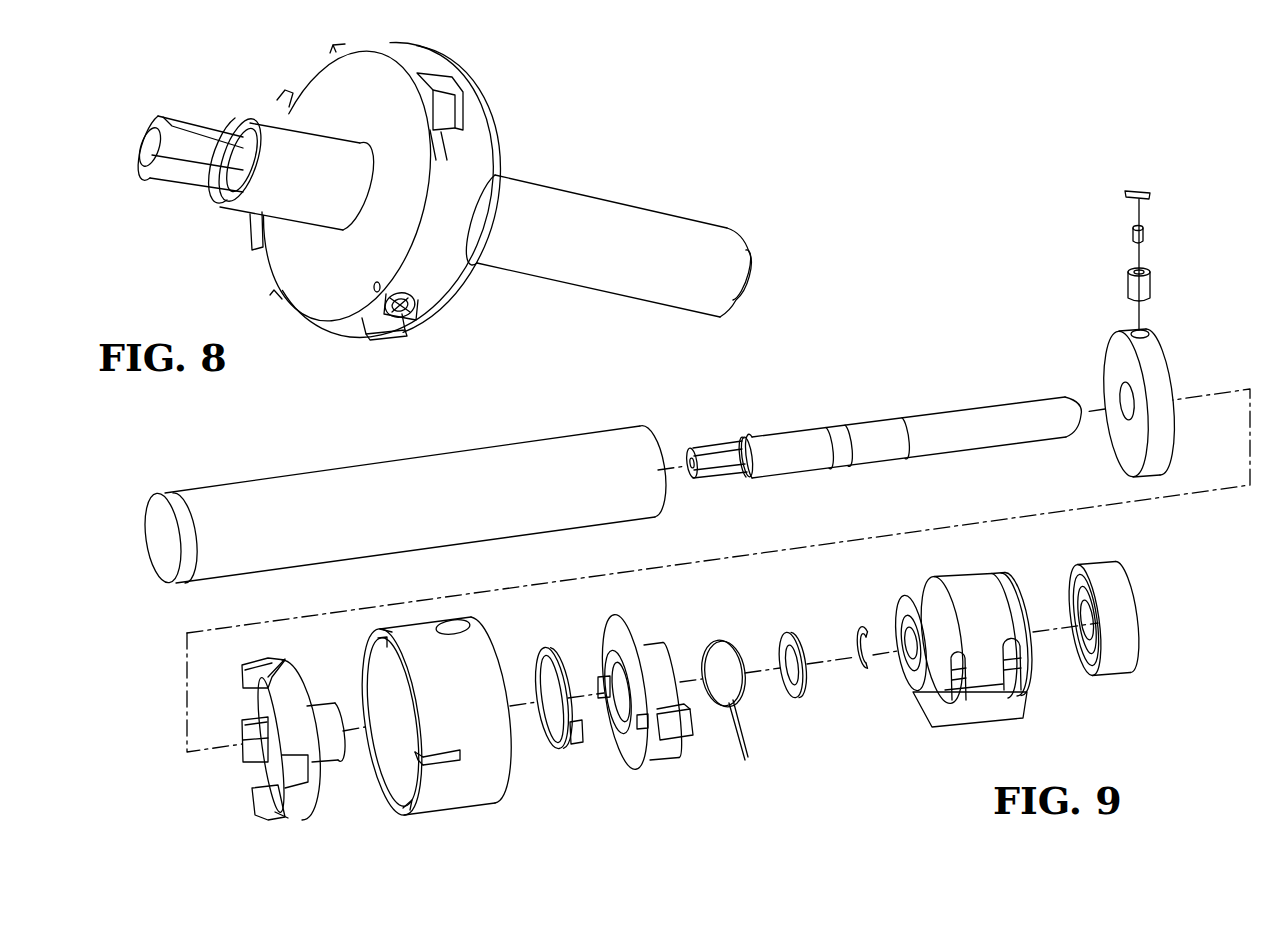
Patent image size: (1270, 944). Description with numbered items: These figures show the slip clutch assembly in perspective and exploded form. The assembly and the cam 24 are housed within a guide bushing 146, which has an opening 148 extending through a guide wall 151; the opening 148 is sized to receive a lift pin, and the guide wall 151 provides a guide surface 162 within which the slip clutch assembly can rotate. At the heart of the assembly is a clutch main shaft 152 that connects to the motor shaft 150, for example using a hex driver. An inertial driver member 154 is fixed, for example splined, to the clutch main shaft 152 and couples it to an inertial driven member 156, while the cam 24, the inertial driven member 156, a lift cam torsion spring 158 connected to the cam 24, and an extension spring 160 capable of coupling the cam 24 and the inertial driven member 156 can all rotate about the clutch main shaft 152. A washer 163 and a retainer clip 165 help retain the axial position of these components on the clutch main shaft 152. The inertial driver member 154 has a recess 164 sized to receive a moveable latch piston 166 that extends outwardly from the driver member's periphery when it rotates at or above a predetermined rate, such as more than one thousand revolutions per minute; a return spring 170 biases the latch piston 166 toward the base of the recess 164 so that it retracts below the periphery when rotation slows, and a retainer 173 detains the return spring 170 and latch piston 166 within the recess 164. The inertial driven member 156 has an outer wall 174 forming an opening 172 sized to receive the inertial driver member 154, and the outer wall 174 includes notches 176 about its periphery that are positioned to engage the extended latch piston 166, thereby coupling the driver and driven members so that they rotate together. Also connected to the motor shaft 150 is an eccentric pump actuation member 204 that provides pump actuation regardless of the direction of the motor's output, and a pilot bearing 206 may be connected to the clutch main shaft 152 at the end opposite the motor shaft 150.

In FIG. 9, the cam 24 is at (662, 732).
In FIG. 9, the guide bushing 146 is at (491, 787).
In FIG. 9, the opening 148 is at (451, 624).
In FIG. 9, the motor shaft 150 is at (243, 487).
In FIG. 9, the guide wall 151 is at (484, 647).
In FIG. 8, the clutch main shaft 152 is at (290, 208).
In FIG. 9, the clutch main shaft 152 is at (957, 413).
In FIG. 8, the inertial driver member 154 is at (330, 85).
In FIG. 9, the inertial driver member 154 is at (1117, 349).
In FIG. 8, the inertial driven member 156 is at (352, 338).
In FIG. 9, the inertial driven member 156 is at (299, 702).
In FIG. 9, the lift cam torsion spring 158 is at (568, 741).
In FIG. 8, the extension spring 160 is at (497, 198).
In FIG. 9, the extension spring 160 is at (720, 646).
In FIG. 9, the guide surface 162 is at (398, 760).
In FIG. 9, the washer 163 is at (803, 693).
In FIG. 8, the recess 164 is at (402, 306).
In FIG. 9, the recess 164 is at (1147, 331).
In FIG. 9, the retainer clip 165 is at (866, 673).
In FIG. 8, the latch piston 166 is at (416, 306).
In FIG. 9, the latch piston 166 is at (1133, 283).
In FIG. 9, the return spring 170 is at (1145, 230).
In FIG. 9, the opening 172 is at (266, 760).
In FIG. 9, the retainer 173 is at (1128, 190).
In FIG. 8, the outer wall 174 is at (430, 62).
In FIG. 9, the outer wall 174 is at (302, 801).
In FIG. 8, the notches 176 is at (467, 108).
In FIG. 9, the notches 176 is at (263, 667).
In FIG. 9, the eccentric pump actuation member 204 is at (964, 585).
In FIG. 9, the pilot bearing 206 is at (1110, 587).